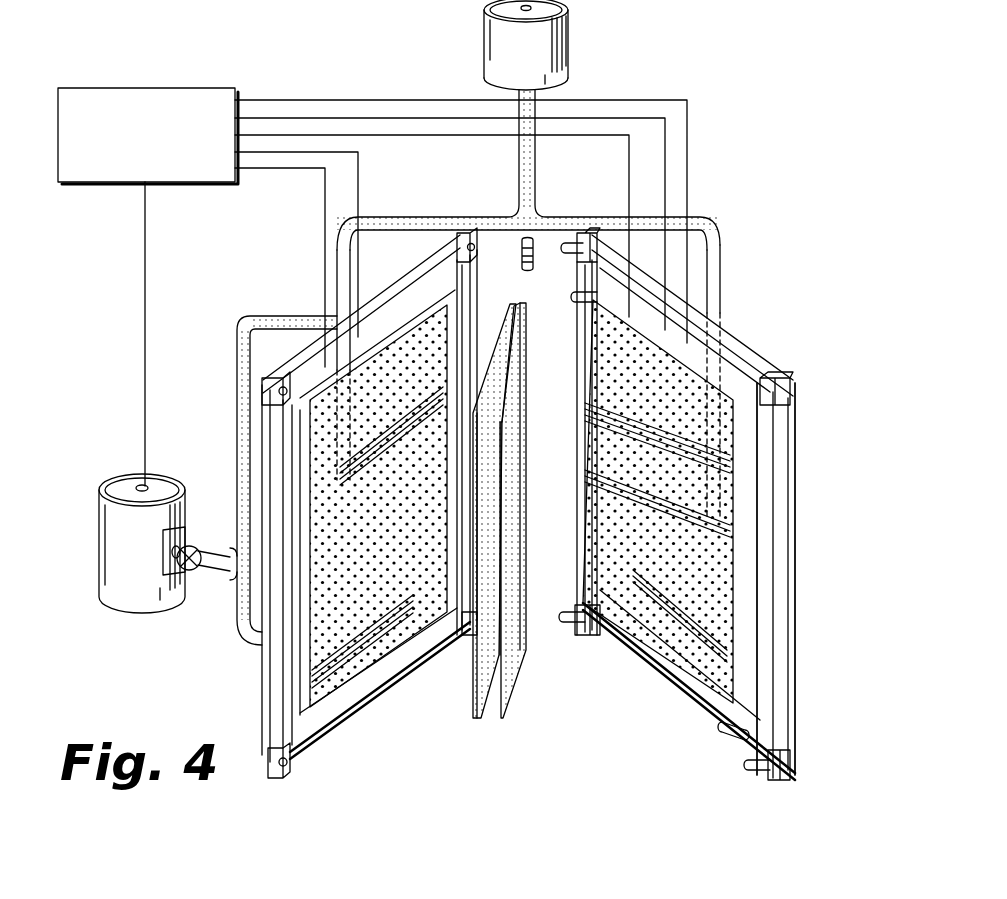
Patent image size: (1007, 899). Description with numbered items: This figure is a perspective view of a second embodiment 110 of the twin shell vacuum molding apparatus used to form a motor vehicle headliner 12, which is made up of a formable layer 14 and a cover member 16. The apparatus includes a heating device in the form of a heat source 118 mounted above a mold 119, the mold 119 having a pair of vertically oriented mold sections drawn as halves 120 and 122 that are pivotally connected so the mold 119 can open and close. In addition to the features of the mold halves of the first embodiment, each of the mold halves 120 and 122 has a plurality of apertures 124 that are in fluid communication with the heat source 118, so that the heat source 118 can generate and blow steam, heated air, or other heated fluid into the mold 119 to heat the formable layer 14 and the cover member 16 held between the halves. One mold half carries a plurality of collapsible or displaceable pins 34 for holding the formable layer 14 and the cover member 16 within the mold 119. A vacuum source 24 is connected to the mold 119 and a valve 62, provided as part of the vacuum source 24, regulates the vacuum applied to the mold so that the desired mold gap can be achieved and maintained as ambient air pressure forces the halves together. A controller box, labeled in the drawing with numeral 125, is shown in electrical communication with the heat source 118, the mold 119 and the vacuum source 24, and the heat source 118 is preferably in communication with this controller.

The second embodiment of the apparatus 110 is at (802, 212).
The heat source 118 is at (568, 22).
The controller 125 is at (170, 182).
The mold 119 is at (770, 352).
The mold half 120 is at (262, 485).
The mold half 122 is at (795, 573).
The apertures 124 is at (320, 437).
The vacuum source 24 is at (160, 600).
The valve 62 is at (189, 572).
The motor vehicle headliner 12 is at (500, 554).
The formable layer 14 is at (473, 693).
The cover member 16 is at (505, 693).
The pins 34 is at (725, 732).